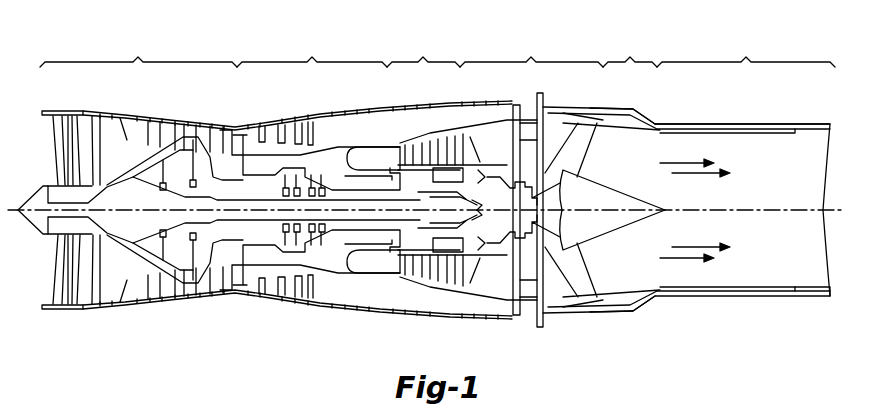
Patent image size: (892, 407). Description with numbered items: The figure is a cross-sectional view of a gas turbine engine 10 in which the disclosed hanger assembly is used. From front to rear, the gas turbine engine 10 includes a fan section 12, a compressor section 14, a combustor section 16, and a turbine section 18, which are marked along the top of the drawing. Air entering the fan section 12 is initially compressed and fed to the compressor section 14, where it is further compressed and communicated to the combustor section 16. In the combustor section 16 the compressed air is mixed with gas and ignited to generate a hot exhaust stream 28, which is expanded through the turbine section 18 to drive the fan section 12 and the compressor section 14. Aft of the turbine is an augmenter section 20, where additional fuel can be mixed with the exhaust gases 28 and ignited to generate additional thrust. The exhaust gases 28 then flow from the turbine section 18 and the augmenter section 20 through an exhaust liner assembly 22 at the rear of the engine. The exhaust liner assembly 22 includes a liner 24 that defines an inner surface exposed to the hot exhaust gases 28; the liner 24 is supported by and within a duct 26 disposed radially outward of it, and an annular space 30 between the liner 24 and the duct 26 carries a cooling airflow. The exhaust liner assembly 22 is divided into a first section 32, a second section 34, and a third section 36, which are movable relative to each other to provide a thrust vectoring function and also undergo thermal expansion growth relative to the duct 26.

The gas turbine engine 10 is at (668, 28).
The fan section 12 is at (138, 49).
The compressor section 14 is at (312, 49).
The combustor section 16 is at (423, 49).
The turbine section 18 is at (531, 49).
The augmenter section 20 is at (630, 49).
The exhaust liner assembly 22 is at (746, 49).
The liner 24 is at (750, 140).
The duct 26 is at (686, 118).
The hot exhaust stream 28 is at (680, 270).
The annular space 30 is at (752, 124).
The first section 32 is at (638, 144).
The second section 34 is at (758, 245).
The third section 36 is at (802, 245).